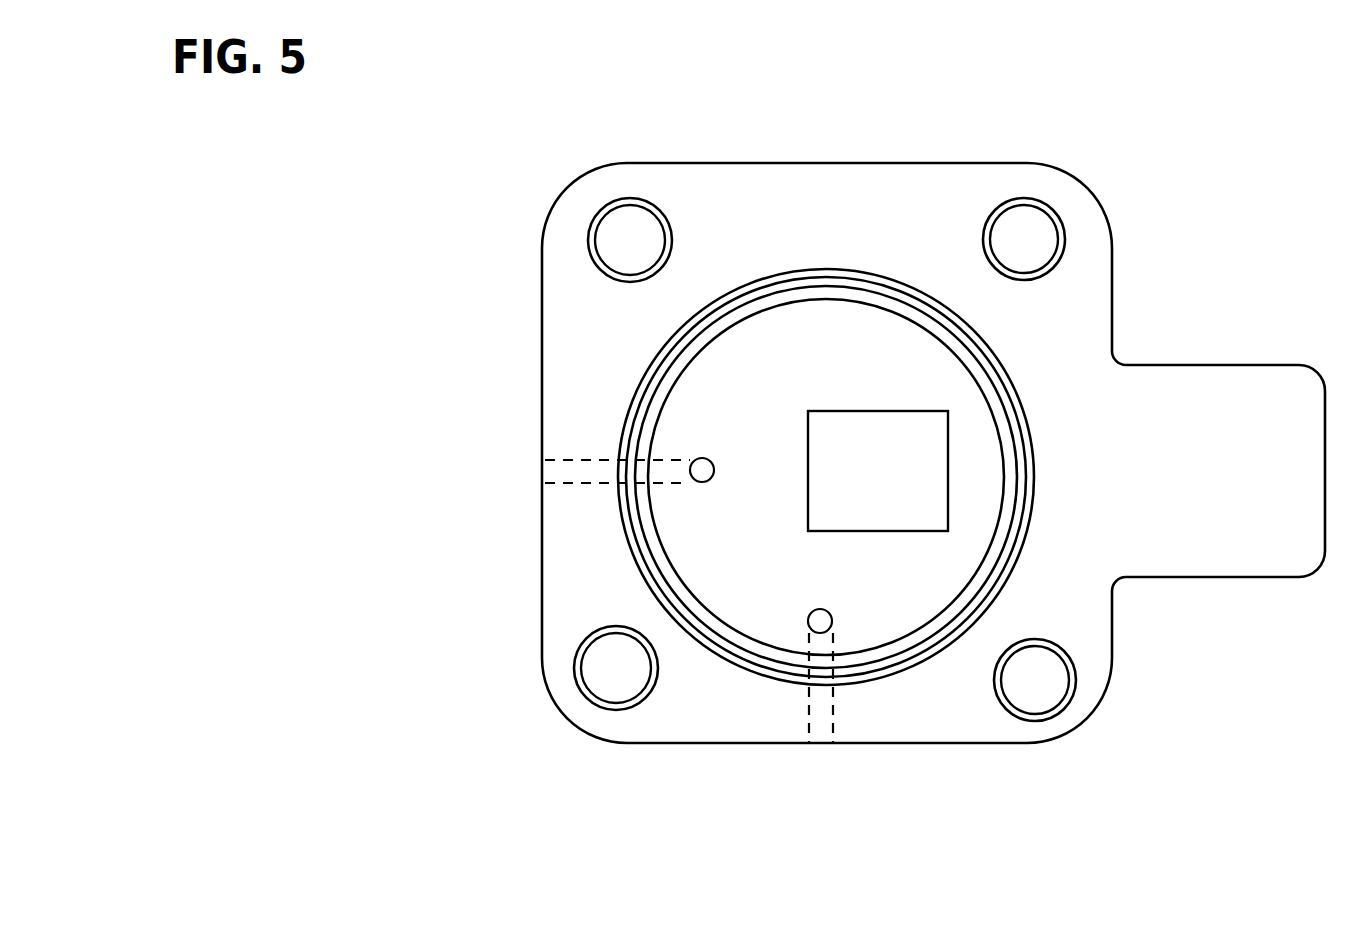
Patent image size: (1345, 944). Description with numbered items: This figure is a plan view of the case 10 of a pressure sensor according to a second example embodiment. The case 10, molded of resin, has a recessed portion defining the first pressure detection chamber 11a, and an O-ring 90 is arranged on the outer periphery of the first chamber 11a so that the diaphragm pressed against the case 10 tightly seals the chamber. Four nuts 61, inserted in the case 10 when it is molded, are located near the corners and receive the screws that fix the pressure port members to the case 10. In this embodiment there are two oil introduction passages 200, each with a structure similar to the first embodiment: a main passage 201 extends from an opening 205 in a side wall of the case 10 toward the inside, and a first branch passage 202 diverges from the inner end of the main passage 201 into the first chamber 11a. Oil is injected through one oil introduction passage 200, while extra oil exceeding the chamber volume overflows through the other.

The case 10 is at (745, 203).
The nuts 61 is at (632, 198).
The O-ring 90 is at (848, 284).
The first pressure detection chamber 11a is at (886, 340).
The first branch passage 202 is at (702, 462).
The main passage 201 is at (598, 458).
The opening 205 is at (542, 480).
The oil introduction passage 200 is at (582, 483).